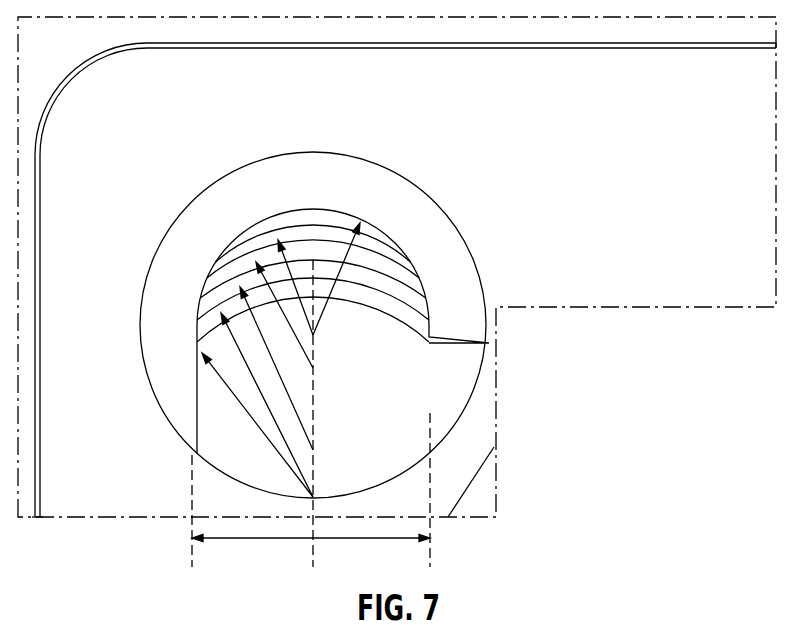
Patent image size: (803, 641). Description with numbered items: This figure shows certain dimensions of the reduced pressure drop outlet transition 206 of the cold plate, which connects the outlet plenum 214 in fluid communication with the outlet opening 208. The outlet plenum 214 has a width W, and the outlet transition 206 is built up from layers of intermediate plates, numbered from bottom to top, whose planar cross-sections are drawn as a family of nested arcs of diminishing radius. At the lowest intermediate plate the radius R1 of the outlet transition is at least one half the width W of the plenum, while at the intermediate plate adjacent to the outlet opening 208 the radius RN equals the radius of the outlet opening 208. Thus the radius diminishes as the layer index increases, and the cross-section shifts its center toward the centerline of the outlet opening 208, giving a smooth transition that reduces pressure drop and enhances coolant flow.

The outlet transition 206 is at (370, 322).
The outlet opening 208 is at (385, 241).
The outlet plenum 214 is at (394, 416).
The radius of the outlet transition at the lowest intermediate plate R1 is at (228, 388).
The radius of the outlet transition at the intermediate plate adjacent the outlet op RN is at (320, 258).
The width of the outlet plenum W is at (294, 540).